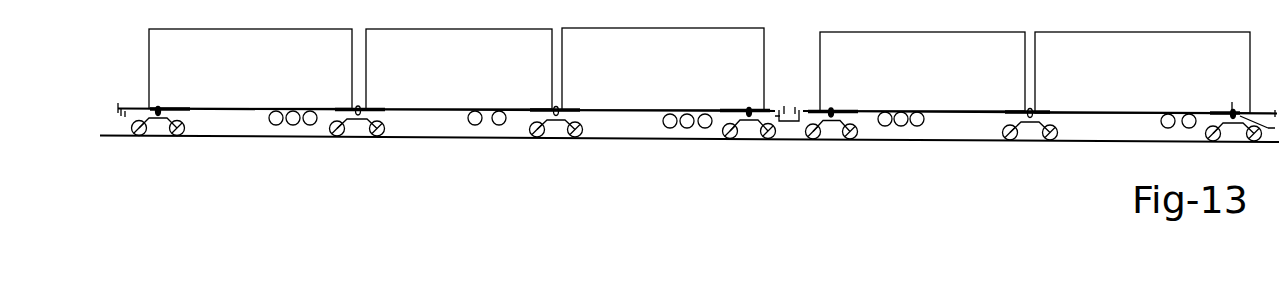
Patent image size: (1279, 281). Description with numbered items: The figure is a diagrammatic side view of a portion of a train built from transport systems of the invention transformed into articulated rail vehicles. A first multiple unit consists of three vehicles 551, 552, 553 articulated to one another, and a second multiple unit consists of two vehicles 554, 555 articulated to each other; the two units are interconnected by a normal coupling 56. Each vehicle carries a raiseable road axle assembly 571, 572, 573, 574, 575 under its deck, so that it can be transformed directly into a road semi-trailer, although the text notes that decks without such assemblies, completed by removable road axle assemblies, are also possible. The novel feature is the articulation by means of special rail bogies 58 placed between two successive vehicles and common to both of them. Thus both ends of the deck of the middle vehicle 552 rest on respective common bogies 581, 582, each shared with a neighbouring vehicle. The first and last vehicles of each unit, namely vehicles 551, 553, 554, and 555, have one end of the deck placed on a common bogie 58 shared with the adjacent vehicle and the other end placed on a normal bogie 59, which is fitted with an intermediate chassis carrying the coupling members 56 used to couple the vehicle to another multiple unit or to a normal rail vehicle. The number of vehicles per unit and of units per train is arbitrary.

The rail vehicle 551 is at (303, 69).
The rail vehicle 552 is at (508, 69).
The rail vehicle 553 is at (698, 68).
The rail vehicle 554 is at (966, 70).
The rail vehicle 555 is at (1193, 71).
The raiseable road axle assembly 571 is at (294, 125).
The raiseable road axle assembly 572 is at (488, 125).
The raiseable road axle assembly 573 is at (688, 128).
The raiseable road axle assembly 574 is at (901, 126).
The raiseable road axle assembly 575 is at (1165, 128).
The common bogie 581 is at (359, 125).
The common bogie 582 is at (557, 126).
The common bogie 58 is at (1030, 127).
The normal bogie 59 is at (156, 119).
The coupling 56 is at (789, 125).